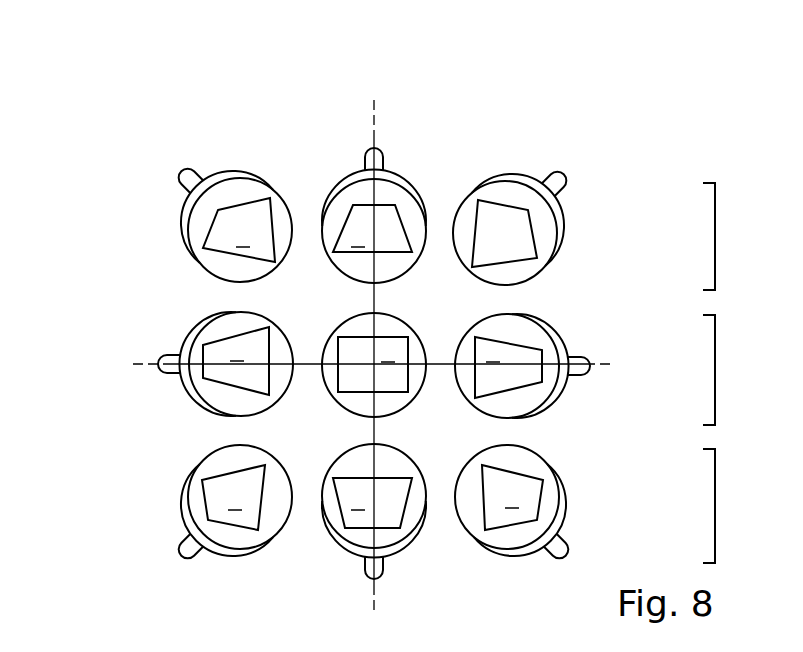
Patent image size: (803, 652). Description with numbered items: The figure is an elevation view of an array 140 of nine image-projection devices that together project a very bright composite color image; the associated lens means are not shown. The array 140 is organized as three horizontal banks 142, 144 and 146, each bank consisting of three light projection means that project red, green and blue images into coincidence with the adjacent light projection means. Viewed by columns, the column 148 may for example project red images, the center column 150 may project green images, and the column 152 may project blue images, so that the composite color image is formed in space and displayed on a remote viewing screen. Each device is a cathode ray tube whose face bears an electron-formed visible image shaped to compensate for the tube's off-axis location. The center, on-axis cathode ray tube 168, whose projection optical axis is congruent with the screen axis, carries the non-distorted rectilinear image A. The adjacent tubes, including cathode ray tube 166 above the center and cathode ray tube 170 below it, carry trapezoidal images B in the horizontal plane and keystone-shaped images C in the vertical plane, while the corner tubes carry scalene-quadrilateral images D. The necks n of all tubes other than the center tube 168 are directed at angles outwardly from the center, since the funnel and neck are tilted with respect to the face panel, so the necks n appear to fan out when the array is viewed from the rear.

The array 140 is at (92, 170).
The column 148 is at (240, 98).
The center column 150 is at (374, 98).
The column 152 is at (508, 98).
The bank 142 is at (715, 238).
The bank 144 is at (715, 364).
The bank 146 is at (715, 502).
The cathode ray tube 166 is at (403, 180).
The center, on-axis cathode ray tube 168 is at (408, 325).
The cathode ray tube 170 is at (407, 457).
The necks n is at (200, 173).